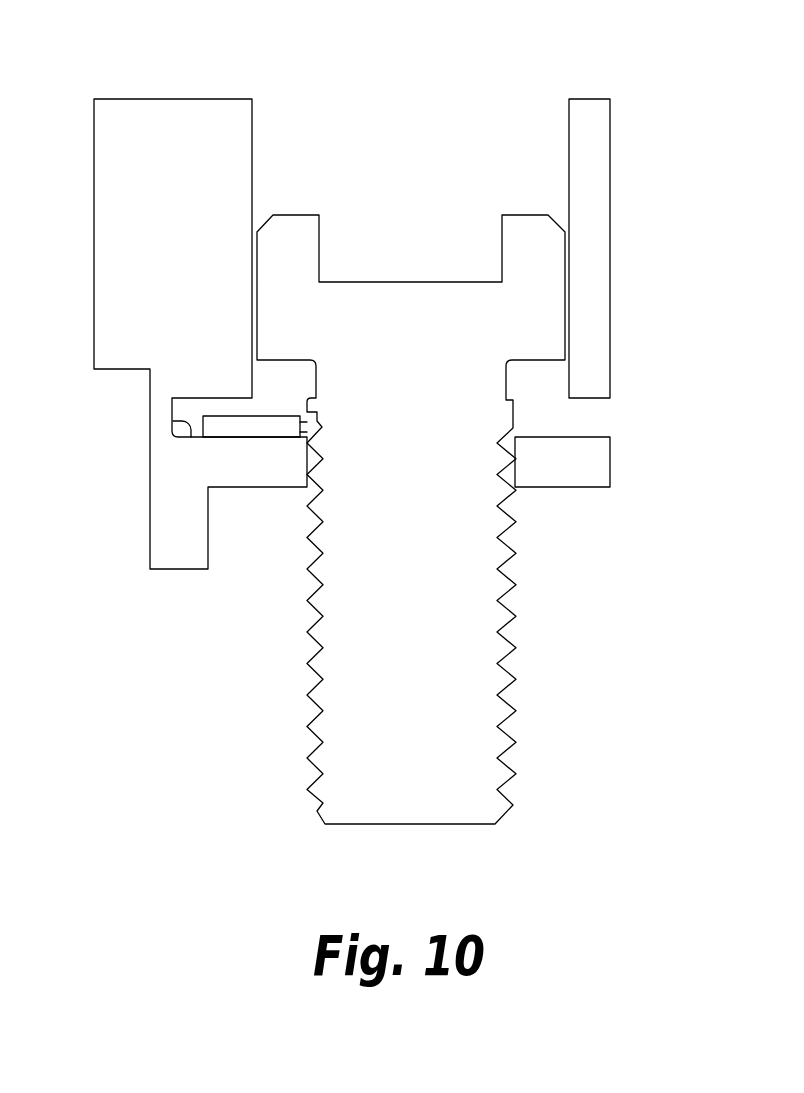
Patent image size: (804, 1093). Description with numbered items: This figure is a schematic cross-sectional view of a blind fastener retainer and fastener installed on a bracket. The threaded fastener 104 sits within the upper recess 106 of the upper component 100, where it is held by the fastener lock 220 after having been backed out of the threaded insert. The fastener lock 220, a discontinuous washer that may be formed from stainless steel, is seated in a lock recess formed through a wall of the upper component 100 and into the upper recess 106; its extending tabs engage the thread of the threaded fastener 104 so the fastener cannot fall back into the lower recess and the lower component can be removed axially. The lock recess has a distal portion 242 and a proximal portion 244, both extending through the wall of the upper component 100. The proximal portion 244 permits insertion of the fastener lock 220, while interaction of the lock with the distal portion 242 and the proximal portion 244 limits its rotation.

The upper component 100 is at (93, 160).
The threaded fastener 104 is at (508, 703).
The upper recess 106 is at (568, 137).
The fastener lock 220 is at (222, 415).
The distal portion 242 is at (188, 433).
The proximal portion 244 is at (632, 418).